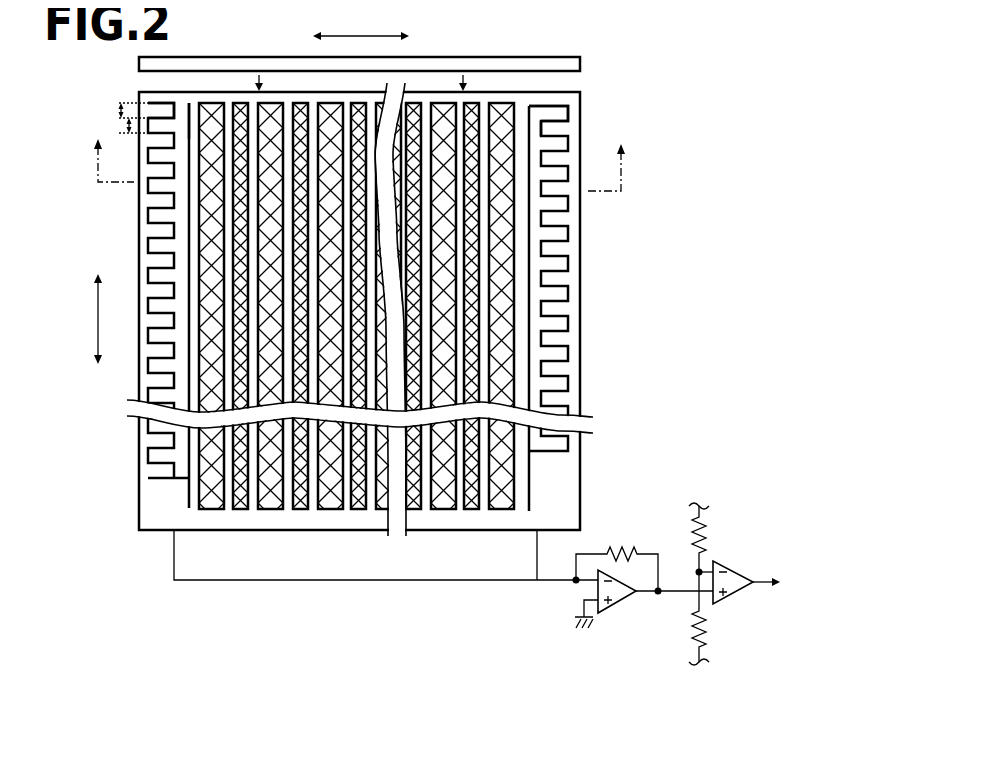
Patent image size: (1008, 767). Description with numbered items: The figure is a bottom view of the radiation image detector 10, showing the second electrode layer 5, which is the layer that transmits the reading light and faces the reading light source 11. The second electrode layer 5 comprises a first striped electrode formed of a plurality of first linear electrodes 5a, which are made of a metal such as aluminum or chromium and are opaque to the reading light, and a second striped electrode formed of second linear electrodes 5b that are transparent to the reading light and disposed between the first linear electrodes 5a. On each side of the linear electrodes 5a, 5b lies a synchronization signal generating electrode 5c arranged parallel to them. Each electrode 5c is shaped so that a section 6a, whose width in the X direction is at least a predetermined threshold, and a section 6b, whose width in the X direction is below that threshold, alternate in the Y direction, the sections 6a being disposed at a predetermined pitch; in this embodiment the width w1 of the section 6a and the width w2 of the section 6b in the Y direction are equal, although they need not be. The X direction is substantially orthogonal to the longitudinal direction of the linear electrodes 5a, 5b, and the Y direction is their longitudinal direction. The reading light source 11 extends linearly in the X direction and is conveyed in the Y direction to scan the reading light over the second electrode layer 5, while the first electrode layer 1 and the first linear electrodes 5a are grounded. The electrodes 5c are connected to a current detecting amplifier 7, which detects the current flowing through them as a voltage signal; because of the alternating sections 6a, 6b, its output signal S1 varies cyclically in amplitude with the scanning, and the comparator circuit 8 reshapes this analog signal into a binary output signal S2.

The first electrode layer 1 is at (361, 178).
The second electrode layer 5 is at (580, 300).
The first linear electrodes 5a is at (211, 511).
The second linear electrodes 5b is at (240, 511).
The synchronization signal generating electrode 5c is at (156, 510).
The section greater than or equal to predetermined threshold size 6a is at (155, 110).
The section smaller than predetermined threshold size 6b is at (180, 120).
The current detecting amplifier 7 is at (619, 601).
The comparator circuit 8 is at (742, 595).
The radiation image detector 10 is at (618, 95).
The reading light source 11 is at (561, 58).
The analog signal S1 is at (677, 594).
The output signal S2 is at (785, 582).
The width of section 6a w1 is at (120, 108).
The width of section 6b w2 is at (127, 127).
The X direction X is at (361, 24).
The Y direction Y is at (89, 319).